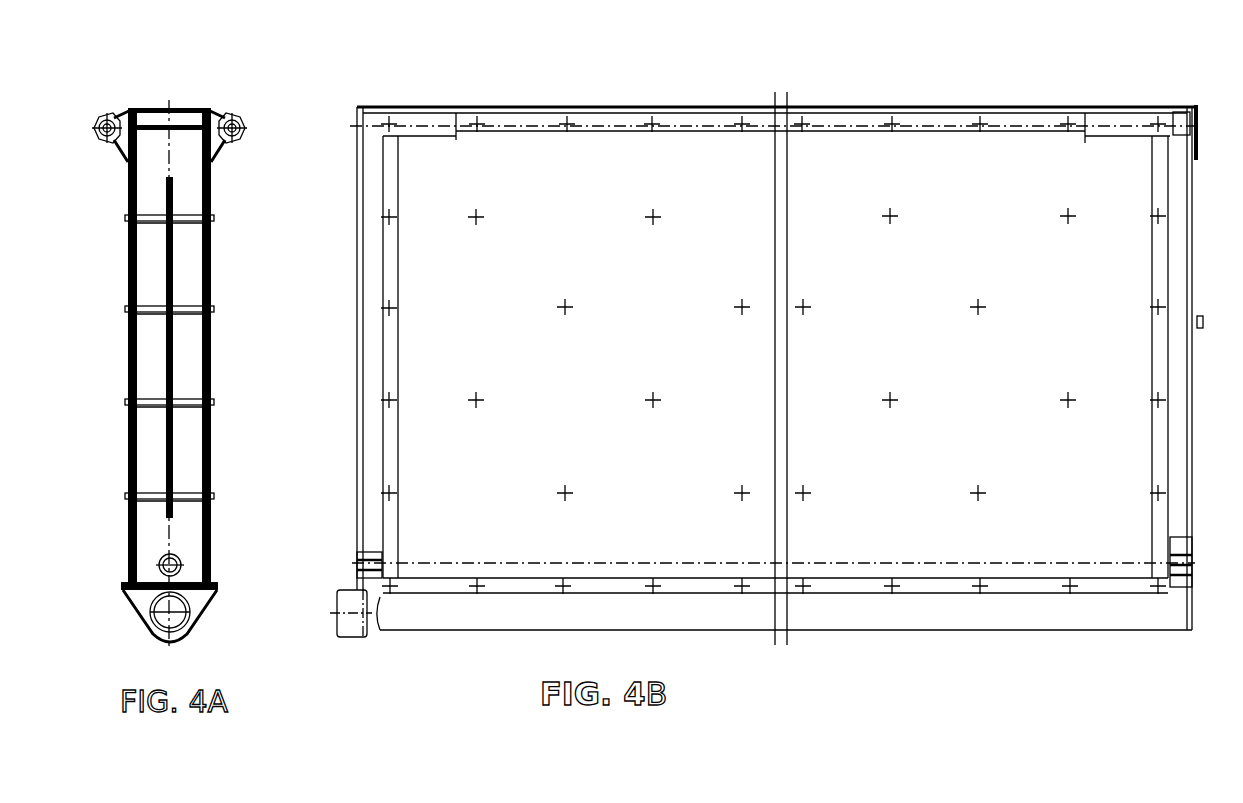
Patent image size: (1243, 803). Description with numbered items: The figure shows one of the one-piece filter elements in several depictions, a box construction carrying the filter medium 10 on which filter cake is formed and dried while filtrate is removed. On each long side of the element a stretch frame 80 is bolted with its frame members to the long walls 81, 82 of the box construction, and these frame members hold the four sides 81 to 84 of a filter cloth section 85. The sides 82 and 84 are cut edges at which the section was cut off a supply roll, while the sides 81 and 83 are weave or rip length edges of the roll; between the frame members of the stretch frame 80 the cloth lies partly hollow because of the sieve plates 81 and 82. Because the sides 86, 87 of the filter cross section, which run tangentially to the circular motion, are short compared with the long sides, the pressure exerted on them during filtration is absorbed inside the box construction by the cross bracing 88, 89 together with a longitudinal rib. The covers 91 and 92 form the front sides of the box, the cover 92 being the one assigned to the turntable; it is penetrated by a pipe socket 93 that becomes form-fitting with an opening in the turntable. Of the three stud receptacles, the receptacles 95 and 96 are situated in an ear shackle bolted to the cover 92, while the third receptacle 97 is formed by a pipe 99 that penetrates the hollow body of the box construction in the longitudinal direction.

In FIG. 4B, the filter medium 10 is at (606, 373).
In FIG. 4B, the stretch frame 80 is at (1062, 152).
In FIG. 4B, the long wall 81 is at (399, 272).
In FIG. 4B, the long wall 82 is at (676, 134).
In FIG. 4B, the side of filter cloth section 83 is at (1150, 351).
In FIG. 4B, the side of filter cloth section 84 is at (672, 578).
In FIG. 4B, the filter cloth section 85 is at (1095, 546).
In FIG. 4A, the short side of filter cross section 86 is at (196, 115).
In FIG. 4A, the short side of filter cross section 87 is at (210, 597).
In FIG. 4A, the cross bracing 88 is at (192, 303).
In FIG. 4A, the cross bracing 89 is at (193, 490).
In FIG. 4B, the cover 91 is at (1195, 590).
In FIG. 4B, the cover 92 is at (355, 440).
In FIG. 4B, the pipe socket 93 is at (343, 638).
In FIG. 4A, the stud receptacle 95 is at (246, 125).
In FIG. 4A, the stud receptacle 96 is at (94, 124).
In FIG. 4A, the stud receptacle 97 is at (183, 566).
In FIG. 4B, the pipe 99 is at (380, 556).